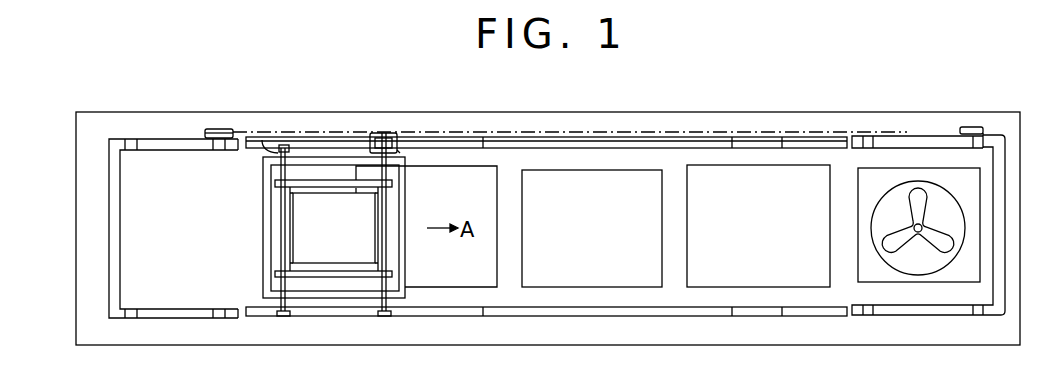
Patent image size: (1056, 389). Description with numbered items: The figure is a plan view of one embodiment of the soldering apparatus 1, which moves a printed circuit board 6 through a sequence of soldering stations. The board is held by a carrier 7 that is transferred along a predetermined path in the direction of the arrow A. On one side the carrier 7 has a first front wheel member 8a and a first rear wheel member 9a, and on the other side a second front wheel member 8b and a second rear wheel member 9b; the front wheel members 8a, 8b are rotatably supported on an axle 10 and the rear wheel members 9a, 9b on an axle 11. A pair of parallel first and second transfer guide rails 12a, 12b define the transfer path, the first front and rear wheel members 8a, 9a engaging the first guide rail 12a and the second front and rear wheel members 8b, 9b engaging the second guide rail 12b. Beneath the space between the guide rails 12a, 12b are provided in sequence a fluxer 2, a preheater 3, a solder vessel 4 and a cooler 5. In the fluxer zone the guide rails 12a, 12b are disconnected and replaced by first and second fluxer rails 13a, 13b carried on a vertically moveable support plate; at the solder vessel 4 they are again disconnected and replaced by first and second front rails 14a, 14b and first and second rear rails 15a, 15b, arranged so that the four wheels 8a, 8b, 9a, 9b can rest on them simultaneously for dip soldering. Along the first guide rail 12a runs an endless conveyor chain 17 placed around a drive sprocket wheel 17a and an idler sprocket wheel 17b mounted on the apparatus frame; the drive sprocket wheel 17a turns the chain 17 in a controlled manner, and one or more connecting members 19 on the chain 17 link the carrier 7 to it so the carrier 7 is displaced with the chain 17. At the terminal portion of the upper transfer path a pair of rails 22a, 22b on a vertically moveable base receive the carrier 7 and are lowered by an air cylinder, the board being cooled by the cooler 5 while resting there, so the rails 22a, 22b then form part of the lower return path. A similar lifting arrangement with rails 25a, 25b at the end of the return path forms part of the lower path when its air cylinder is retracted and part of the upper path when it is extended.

The soldering apparatus 1 is at (533, 112).
The fluxer 2 is at (453, 273).
The preheater 3 is at (592, 263).
The solder vessel 4 is at (760, 270).
The cooler 5 is at (887, 270).
The printed circuit board 6 is at (308, 214).
The carrier 7 is at (338, 157).
The first front wheel member 8a is at (388, 133).
The second front wheel member 8b is at (386, 316).
The first rear wheel member 9a is at (284, 145).
The second rear wheel member 9b is at (288, 316).
The axle 10 is at (398, 151).
The axle 11 is at (265, 142).
The first transfer guide rail 12a is at (320, 137).
The second transfer guide rail 12b is at (333, 310).
The first fluxer rail 13a is at (483, 137).
The second fluxer rail 13b is at (483, 316).
The first front rail 14a is at (832, 137).
The second front rail 14b is at (823, 310).
The first rear rail 15a is at (728, 137).
The second rear rail 15b is at (712, 310).
The endless conveyor chain 17 is at (693, 132).
The drive sprocket wheel 17a is at (978, 127).
The idler sprocket wheel 17b is at (219, 129).
The connecting member 19 is at (378, 133).
The rail 22a is at (918, 136).
The rail 22b is at (953, 310).
The rail 25a is at (163, 143).
The rail 25b is at (175, 313).